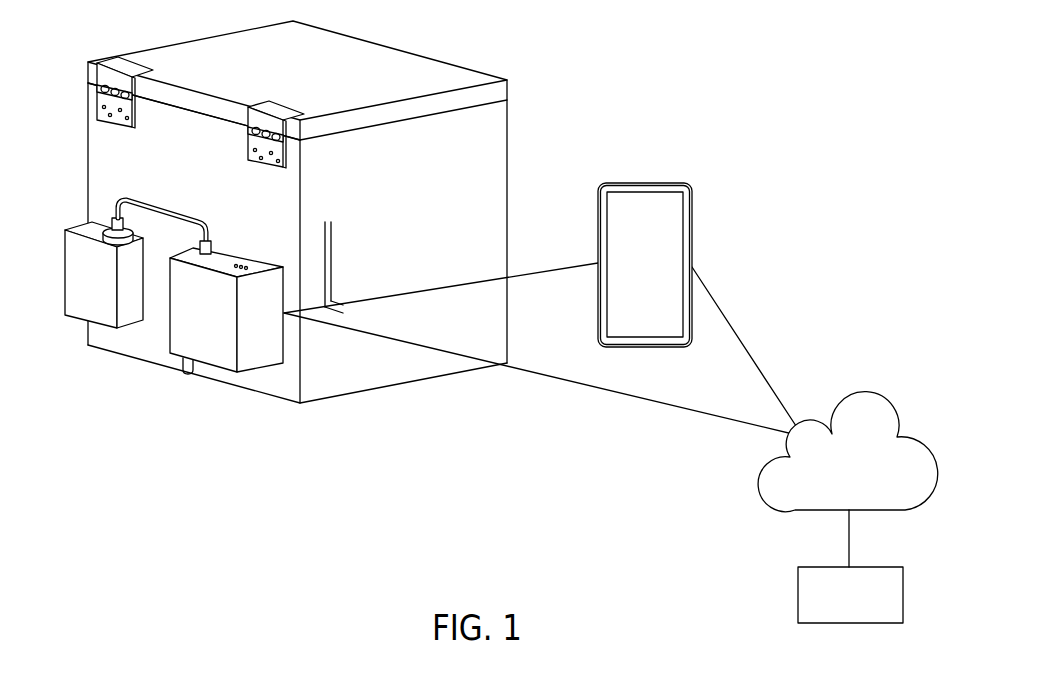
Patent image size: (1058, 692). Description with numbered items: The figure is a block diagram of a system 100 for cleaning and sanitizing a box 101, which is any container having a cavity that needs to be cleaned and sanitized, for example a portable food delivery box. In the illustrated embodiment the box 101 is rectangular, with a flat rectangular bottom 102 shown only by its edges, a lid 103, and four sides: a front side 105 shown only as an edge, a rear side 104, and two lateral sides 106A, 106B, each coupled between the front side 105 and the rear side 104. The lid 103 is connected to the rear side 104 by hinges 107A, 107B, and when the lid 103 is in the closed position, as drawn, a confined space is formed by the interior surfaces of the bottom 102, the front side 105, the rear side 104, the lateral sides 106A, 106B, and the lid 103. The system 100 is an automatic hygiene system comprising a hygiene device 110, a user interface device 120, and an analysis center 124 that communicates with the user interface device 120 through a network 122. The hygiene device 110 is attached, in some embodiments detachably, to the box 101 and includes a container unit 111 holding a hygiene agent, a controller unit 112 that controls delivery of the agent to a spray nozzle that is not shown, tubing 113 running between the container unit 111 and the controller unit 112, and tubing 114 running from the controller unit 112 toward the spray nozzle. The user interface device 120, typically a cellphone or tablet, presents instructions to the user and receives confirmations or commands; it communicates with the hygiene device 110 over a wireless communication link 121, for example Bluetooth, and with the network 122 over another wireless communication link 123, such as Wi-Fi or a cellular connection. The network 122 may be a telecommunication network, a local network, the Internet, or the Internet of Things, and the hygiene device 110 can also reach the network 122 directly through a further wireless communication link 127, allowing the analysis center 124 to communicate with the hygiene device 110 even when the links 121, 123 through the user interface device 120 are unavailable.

The system 100 is at (735, 32).
The box 101 is at (189, 41).
The bottom 102 is at (403, 382).
The lid 103 is at (405, 66).
The rear side 104 is at (110, 172).
The front side 105 is at (507, 231).
The lateral side 106A is at (491, 148).
The lateral side 106B is at (87, 143).
The hinge 107A is at (274, 107).
The hinge 107B is at (120, 67).
The hygiene device 110 is at (168, 331).
The container unit 111 is at (78, 272).
The controller unit 112 is at (228, 258).
The tubing 113 is at (164, 206).
The tubing 114 is at (182, 364).
The user interface device 120 is at (647, 180).
The wireless communication link 121 is at (443, 287).
The network 122 is at (861, 402).
The wireless communication link 123 is at (748, 348).
The analysis center 124 is at (868, 565).
The wireless communication link 127 is at (540, 375).